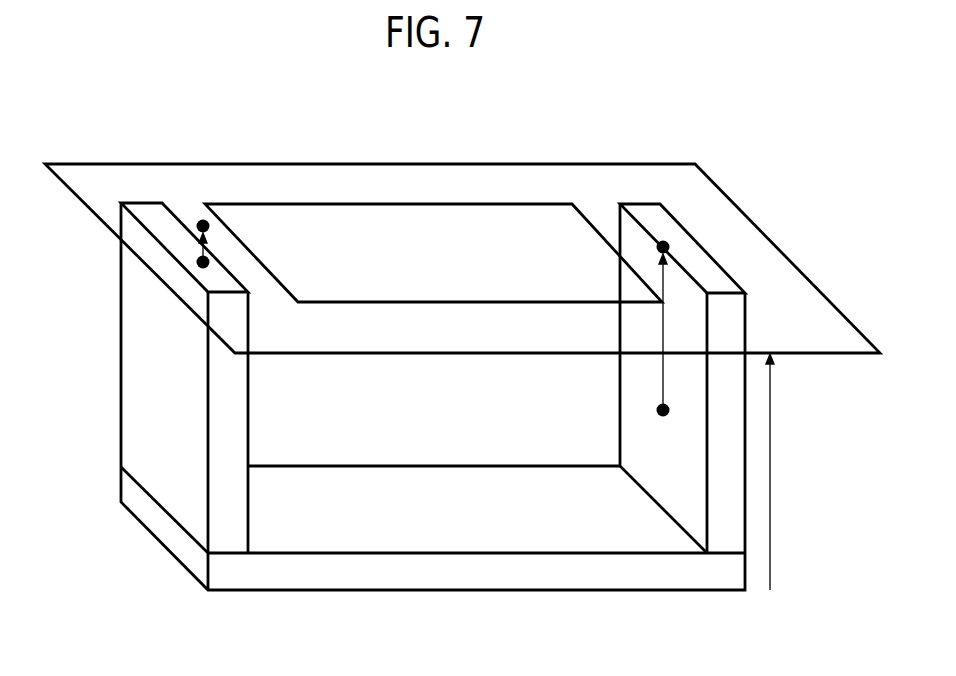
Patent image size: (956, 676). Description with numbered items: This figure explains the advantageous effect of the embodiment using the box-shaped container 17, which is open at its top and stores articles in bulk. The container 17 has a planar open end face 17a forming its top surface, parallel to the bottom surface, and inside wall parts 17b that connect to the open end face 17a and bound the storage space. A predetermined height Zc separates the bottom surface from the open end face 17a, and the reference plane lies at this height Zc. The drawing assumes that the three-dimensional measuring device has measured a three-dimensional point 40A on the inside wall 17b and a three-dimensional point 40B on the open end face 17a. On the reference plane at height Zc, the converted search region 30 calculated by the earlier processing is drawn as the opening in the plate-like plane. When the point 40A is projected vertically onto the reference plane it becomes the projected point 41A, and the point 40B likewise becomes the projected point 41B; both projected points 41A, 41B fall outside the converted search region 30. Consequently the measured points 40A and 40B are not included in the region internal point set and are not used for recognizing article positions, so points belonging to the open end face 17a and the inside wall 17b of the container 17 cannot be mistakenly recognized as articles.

The container 17 is at (379, 425).
The open end face 17a is at (160, 227).
The inside wall parts 17b is at (672, 467).
The converted search region 30 is at (607, 242).
The 3D point on the inside wall 40A is at (658, 406).
The 3D point on the open end face 40B is at (202, 266).
The projected 3D point 41A is at (664, 240).
The projected 3D point 41B is at (201, 218).
The height Zc is at (792, 472).